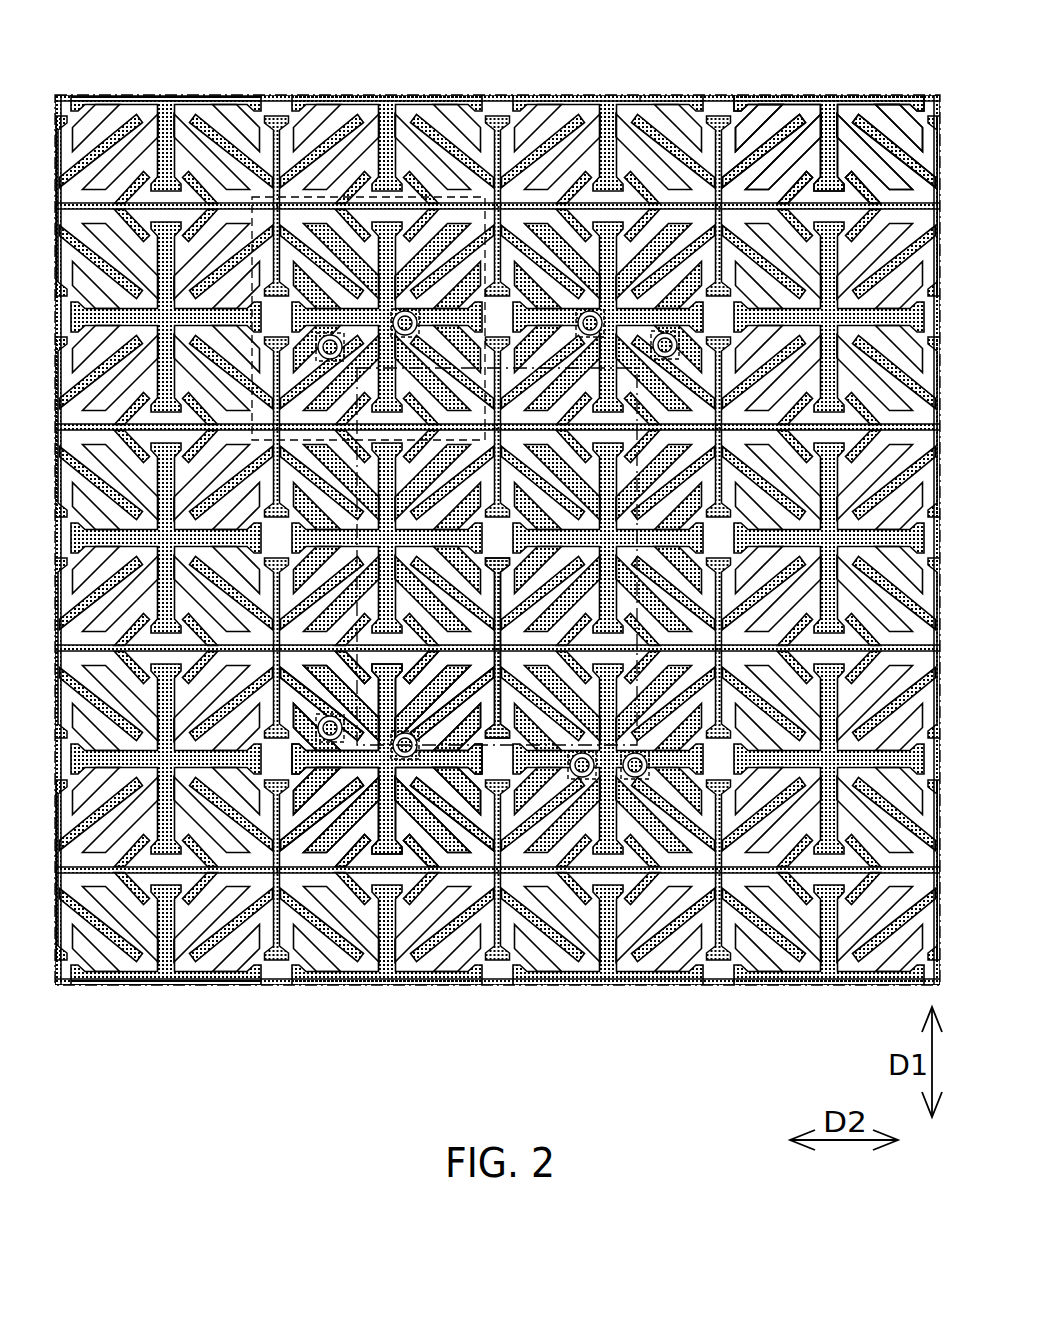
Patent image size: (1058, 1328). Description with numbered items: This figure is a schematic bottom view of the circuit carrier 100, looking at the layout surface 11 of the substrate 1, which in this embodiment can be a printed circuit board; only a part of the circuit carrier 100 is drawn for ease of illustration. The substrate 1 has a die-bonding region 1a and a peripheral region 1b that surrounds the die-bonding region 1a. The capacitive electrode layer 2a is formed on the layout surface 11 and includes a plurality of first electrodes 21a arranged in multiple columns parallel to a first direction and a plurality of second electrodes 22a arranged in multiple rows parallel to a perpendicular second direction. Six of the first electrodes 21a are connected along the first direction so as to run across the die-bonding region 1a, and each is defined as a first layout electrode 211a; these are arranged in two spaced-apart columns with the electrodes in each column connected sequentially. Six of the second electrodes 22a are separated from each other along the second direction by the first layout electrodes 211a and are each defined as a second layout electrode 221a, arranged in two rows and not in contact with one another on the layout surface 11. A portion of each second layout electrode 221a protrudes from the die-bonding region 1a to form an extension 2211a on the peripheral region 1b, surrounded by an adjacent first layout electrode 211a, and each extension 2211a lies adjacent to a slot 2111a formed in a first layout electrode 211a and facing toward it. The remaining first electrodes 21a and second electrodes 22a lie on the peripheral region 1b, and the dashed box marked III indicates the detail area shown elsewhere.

The circuit carrier 100 is at (501, 544).
The substrate 1 is at (497, 544).
The die-bonding region 1a is at (549, 356).
The peripheral region 1b is at (641, 86).
The capacitive electrode layer 2a is at (831, 88).
The layout surface 11 is at (62, 84).
The first electrode 21a is at (163, 994).
The first layout electrode 211a is at (316, 864).
The second electrode 22a is at (722, 982).
The second layout electrode 221a is at (495, 754).
The slot 2111a is at (579, 790).
The extension 2211a is at (637, 792).
The section line III is at (354, 196).